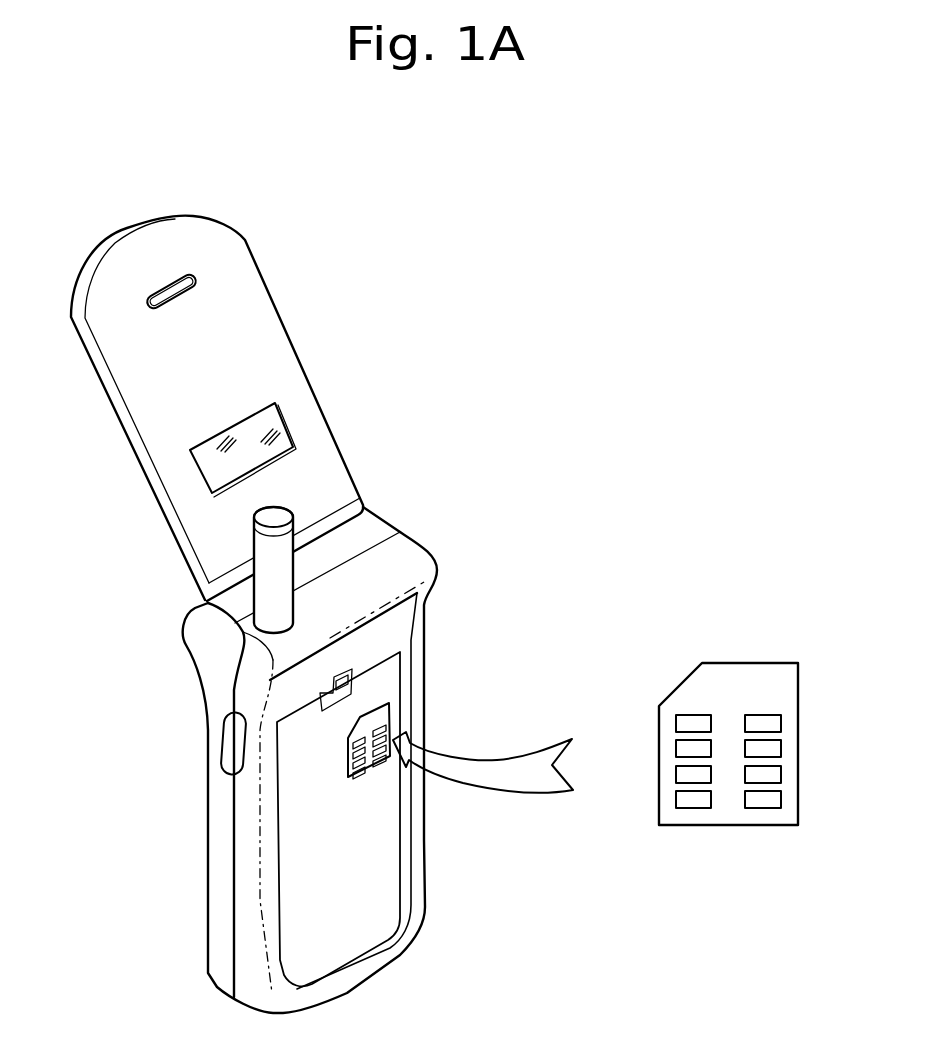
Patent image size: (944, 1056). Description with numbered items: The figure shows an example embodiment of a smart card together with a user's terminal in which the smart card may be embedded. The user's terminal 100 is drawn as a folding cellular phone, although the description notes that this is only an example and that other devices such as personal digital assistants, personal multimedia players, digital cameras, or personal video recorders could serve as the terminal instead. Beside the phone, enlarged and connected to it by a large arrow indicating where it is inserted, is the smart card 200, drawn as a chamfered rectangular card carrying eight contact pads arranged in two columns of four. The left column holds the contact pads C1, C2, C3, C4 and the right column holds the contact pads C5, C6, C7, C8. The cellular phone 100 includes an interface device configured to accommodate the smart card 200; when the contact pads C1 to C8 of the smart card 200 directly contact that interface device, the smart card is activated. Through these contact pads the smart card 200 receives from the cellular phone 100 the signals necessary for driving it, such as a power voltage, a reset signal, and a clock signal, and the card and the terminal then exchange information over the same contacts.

The user's terminal 100 is at (403, 547).
The smart card 200 is at (757, 663).
The contact pad C1 is at (676, 722).
The contact pad C2 is at (676, 747).
The contact pad C3 is at (676, 773).
The contact pad C4 is at (676, 798).
The contact pad C5 is at (781, 722).
The contact pad C6 is at (781, 747).
The contact pad C7 is at (781, 773).
The contact pad C8 is at (781, 798).